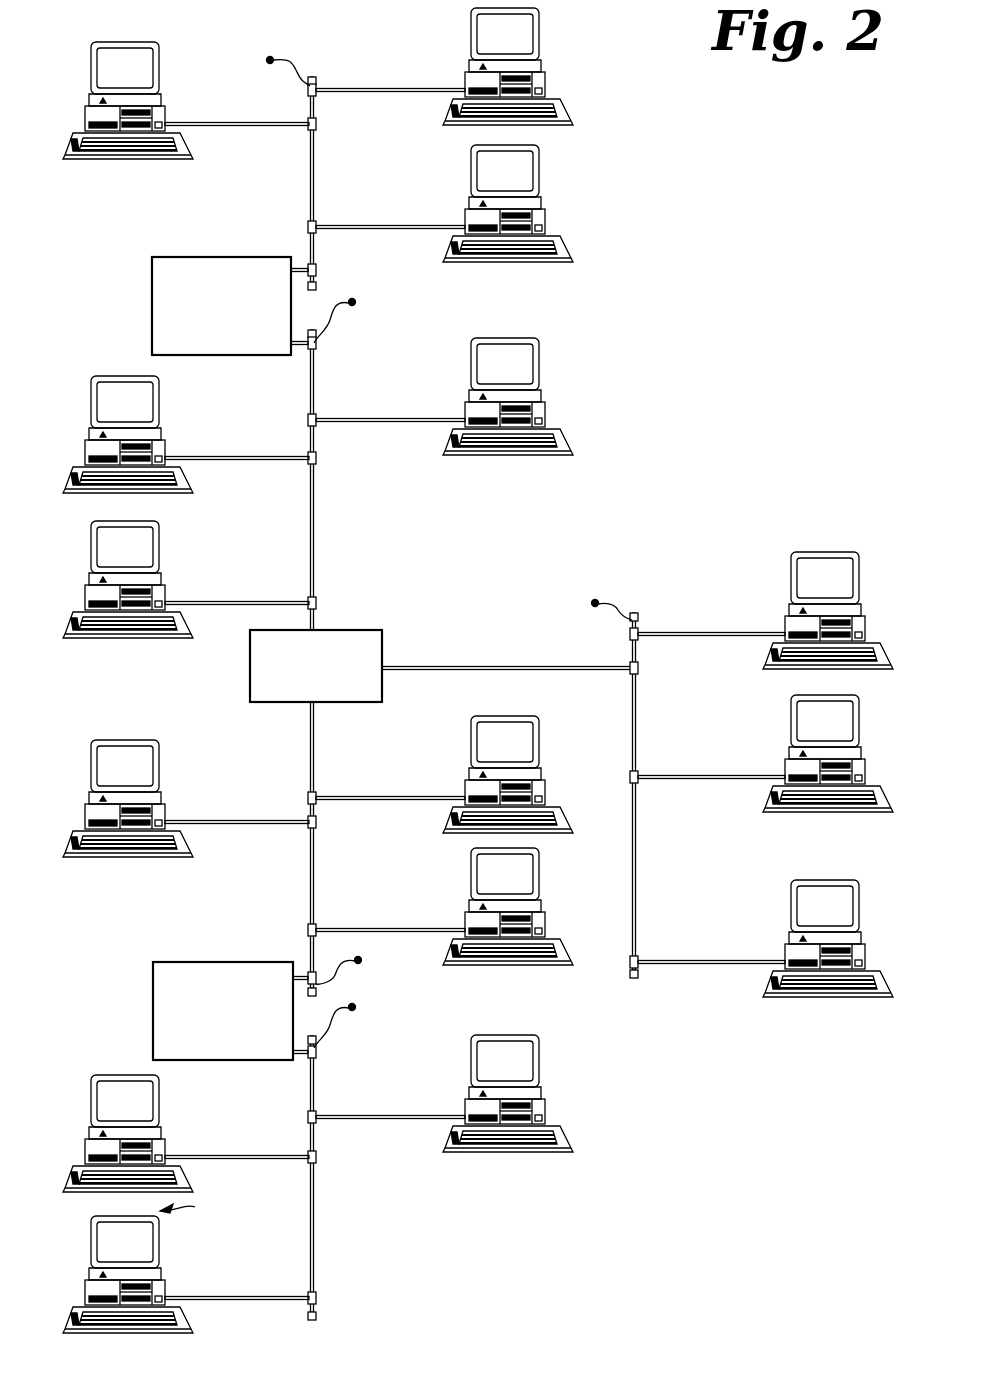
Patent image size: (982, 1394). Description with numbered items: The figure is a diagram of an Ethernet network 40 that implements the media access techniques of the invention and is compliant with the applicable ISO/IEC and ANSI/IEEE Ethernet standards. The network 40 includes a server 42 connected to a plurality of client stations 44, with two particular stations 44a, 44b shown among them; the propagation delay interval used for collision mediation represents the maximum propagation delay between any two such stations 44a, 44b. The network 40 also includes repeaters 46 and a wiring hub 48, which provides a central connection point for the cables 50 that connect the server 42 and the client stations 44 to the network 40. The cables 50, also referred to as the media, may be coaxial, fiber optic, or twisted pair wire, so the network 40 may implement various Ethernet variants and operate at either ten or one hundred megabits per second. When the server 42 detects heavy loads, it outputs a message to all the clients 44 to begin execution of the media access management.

The network 40 is at (720, 232).
The server 42 is at (165, 1280).
The client stations 44 is at (183, 167).
The station 44a is at (165, 1138).
The station 44b is at (570, 120).
The repeaters 46 is at (245, 257).
The wiring hub 48 is at (365, 630).
The cables 50 is at (314, 540).